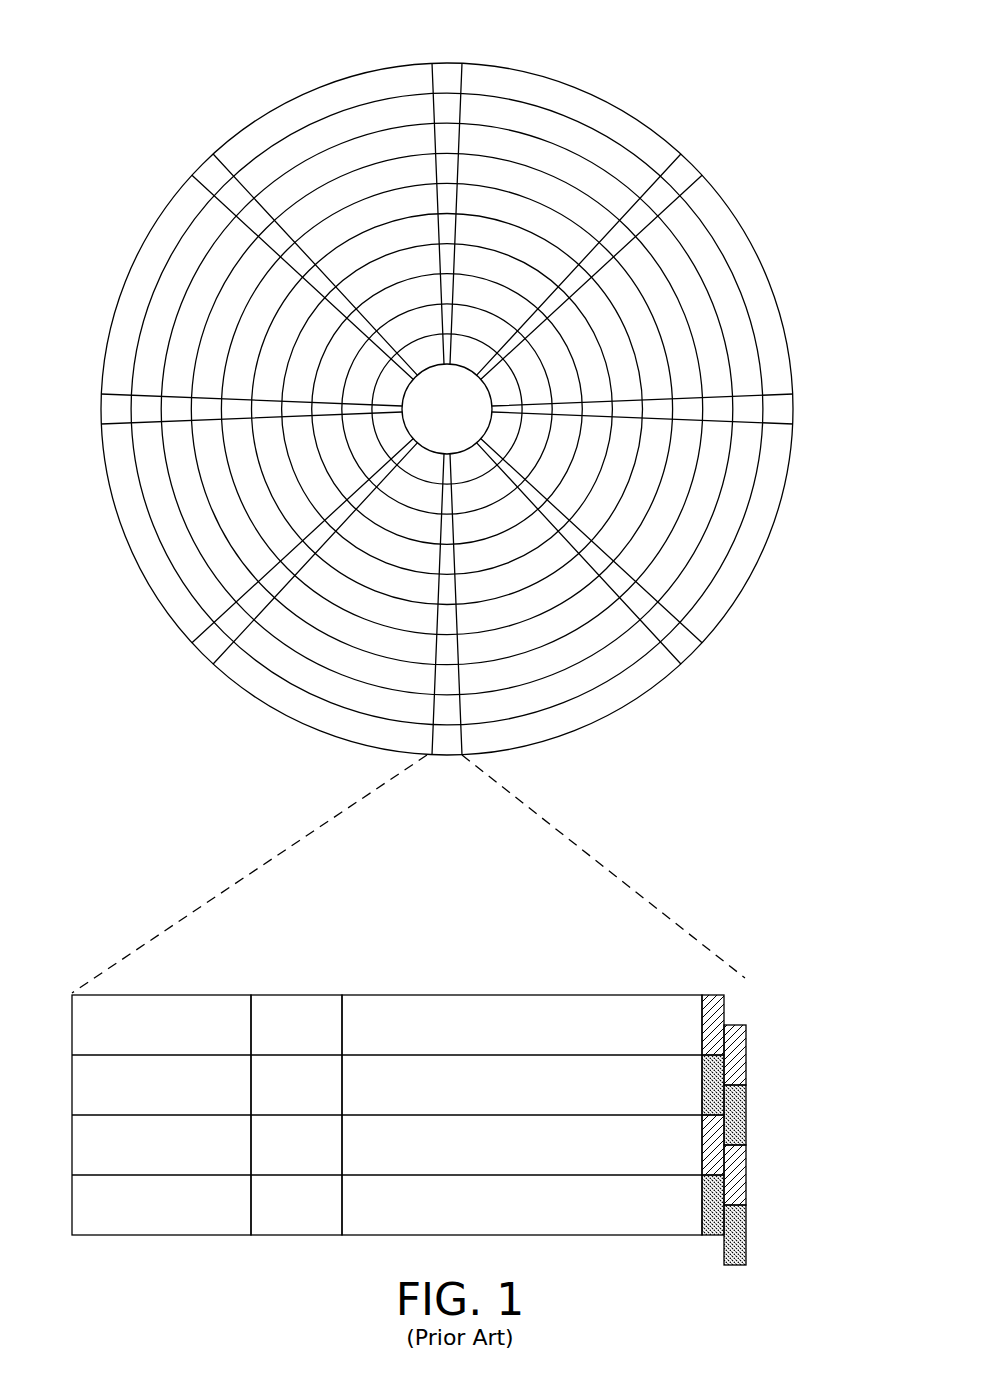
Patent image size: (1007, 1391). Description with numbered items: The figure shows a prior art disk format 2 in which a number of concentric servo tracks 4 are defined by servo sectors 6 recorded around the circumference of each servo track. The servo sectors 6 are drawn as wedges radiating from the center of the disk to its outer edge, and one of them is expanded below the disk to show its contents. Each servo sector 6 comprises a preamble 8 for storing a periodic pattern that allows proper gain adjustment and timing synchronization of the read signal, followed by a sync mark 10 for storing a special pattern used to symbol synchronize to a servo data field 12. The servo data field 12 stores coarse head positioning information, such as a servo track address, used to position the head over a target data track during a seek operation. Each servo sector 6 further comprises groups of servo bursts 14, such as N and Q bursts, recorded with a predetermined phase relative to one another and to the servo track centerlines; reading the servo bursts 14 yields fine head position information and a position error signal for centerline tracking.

The disk format 2 is at (184, 64).
The servo tracks 4 is at (563, 130).
The servo sectors 6 is at (447, 75).
The preamble 8 is at (170, 993).
The sync mark 10 is at (298, 993).
The servo data field 12 is at (508, 993).
The servo bursts 14 is at (747, 987).